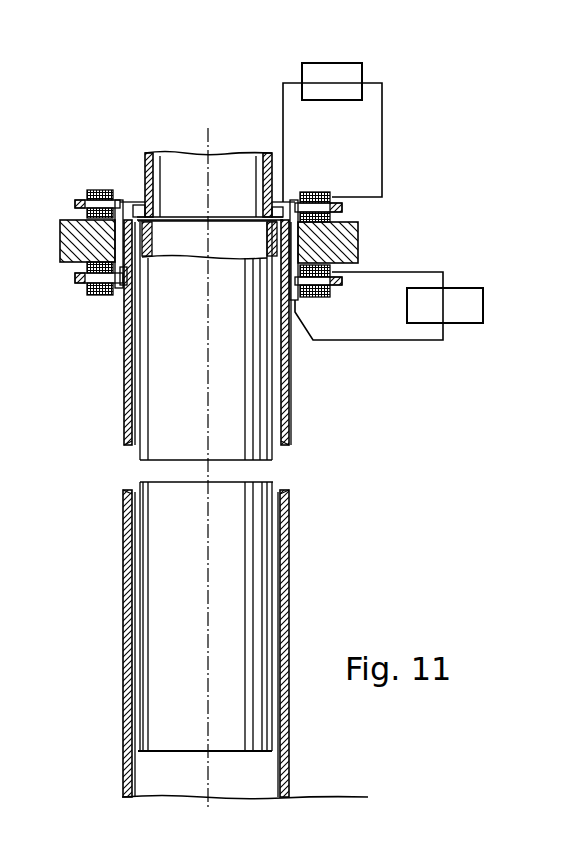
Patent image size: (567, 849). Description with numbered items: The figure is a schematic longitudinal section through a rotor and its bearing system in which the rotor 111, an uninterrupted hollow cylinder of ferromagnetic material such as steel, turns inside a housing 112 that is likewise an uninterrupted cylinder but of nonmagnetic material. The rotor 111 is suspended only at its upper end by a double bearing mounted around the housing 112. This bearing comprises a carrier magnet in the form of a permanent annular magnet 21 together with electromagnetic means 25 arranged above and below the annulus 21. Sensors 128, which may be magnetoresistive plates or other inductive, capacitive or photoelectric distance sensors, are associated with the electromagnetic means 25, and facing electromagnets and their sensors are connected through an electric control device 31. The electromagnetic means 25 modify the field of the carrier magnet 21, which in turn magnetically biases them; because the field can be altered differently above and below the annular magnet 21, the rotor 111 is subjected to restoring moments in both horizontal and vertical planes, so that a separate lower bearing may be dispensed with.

The permanent annular magnet 21 is at (78, 242).
The electromagnetic means 25 is at (298, 183).
The electric control device 31 is at (336, 73).
The rotor 111 is at (160, 508).
The housing 112 is at (125, 408).
The sensors 128 is at (138, 210).